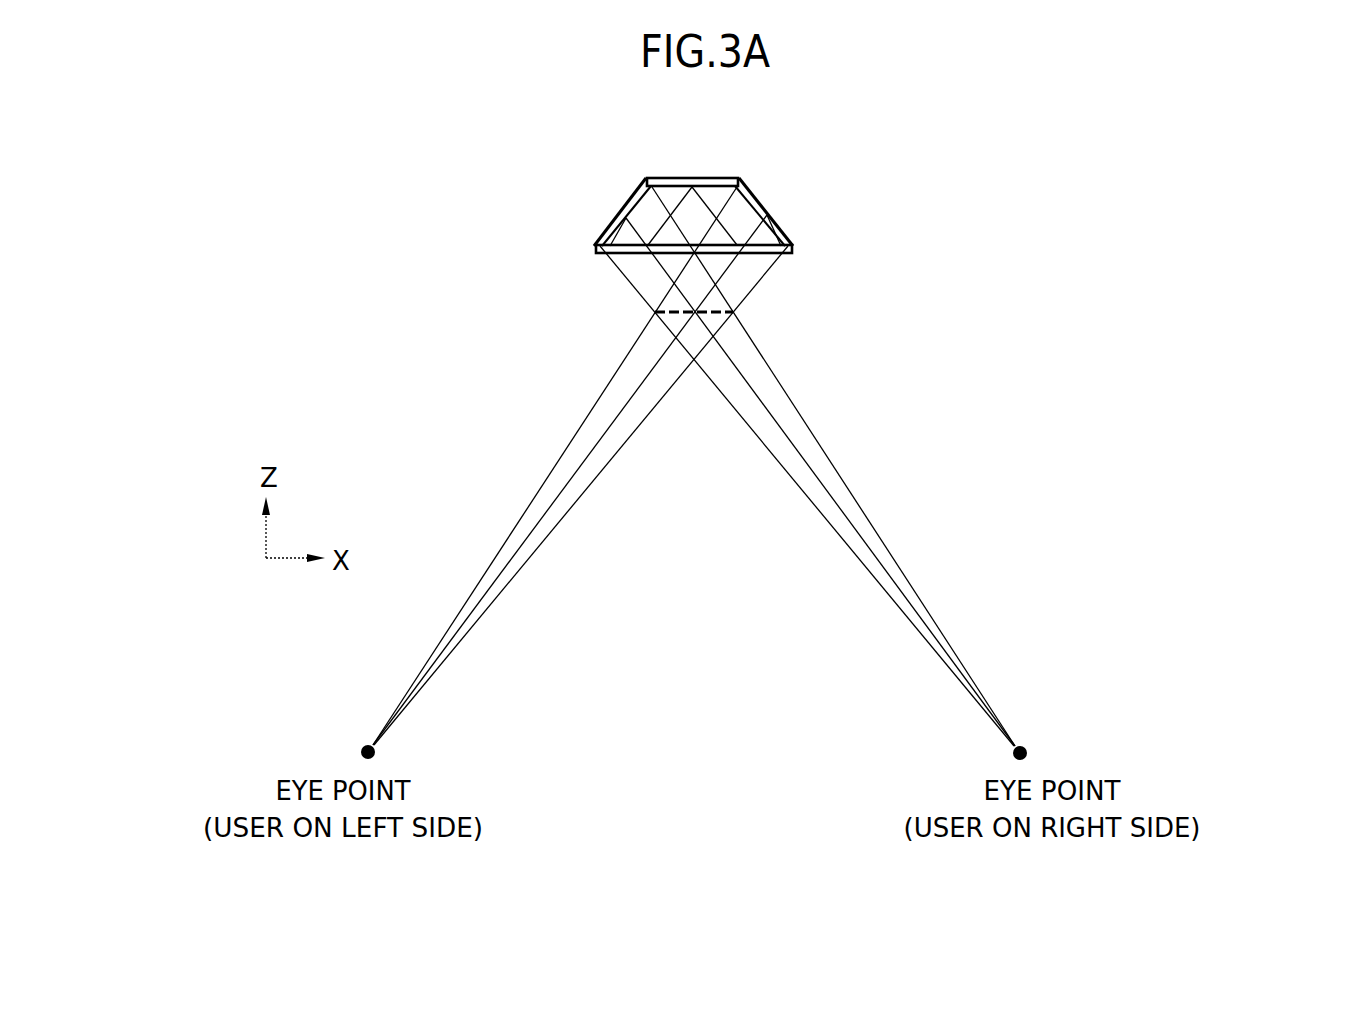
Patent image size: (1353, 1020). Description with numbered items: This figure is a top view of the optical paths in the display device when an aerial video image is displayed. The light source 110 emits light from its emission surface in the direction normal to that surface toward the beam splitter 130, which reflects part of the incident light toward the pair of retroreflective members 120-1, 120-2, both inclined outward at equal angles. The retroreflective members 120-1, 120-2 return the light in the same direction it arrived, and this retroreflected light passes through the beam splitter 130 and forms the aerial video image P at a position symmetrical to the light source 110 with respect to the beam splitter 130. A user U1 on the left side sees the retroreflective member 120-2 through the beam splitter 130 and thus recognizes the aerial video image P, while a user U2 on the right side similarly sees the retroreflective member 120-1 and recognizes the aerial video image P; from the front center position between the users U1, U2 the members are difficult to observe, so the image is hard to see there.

The light source 110 is at (707, 177).
The retroreflective member 120-1 is at (616, 216).
The retroreflective member 120-2 is at (770, 208).
The beam splitter 130 is at (777, 257).
The aerial video image P is at (660, 304).
The user on the left side U1 is at (351, 753).
The user on the right side U2 is at (1038, 753).